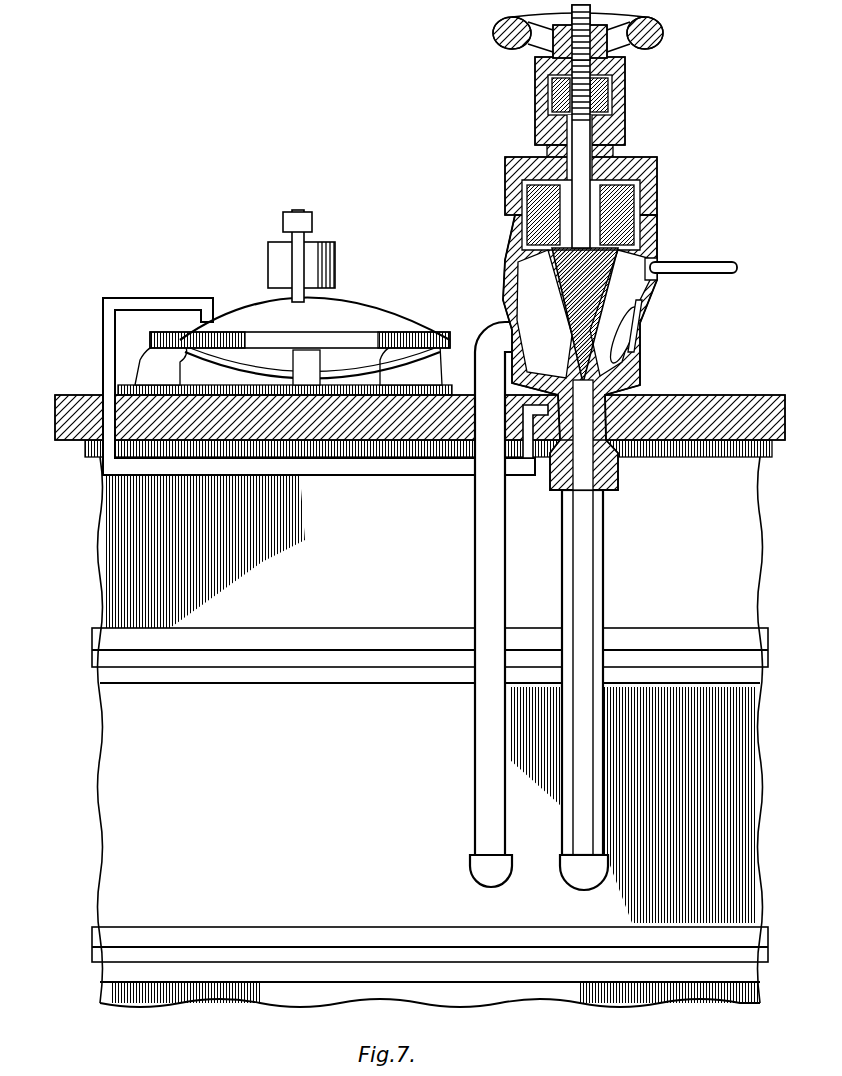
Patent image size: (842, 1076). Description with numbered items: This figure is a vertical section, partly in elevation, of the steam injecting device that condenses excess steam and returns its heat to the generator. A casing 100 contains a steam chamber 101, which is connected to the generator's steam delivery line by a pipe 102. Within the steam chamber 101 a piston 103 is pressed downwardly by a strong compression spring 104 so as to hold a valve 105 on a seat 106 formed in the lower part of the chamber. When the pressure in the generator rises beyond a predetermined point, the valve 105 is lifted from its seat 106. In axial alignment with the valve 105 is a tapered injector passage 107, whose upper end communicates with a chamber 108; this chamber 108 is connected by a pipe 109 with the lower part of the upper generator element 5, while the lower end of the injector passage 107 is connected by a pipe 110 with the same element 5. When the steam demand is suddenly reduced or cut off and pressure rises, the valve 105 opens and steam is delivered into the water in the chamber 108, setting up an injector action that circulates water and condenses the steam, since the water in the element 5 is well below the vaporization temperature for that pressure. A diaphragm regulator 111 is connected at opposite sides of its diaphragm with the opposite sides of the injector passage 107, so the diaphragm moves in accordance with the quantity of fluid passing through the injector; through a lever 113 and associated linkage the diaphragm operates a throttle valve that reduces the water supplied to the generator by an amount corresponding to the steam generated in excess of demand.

The upper generator element 5 is at (120, 745).
The casing 100 is at (655, 248).
The steam chamber 101 is at (660, 272).
The pipe 102 is at (700, 280).
The piston 103 is at (648, 222).
The compression spring 104 is at (630, 183).
The valve 105 is at (612, 296).
The seat 106 is at (625, 318).
The injector passage 107 is at (590, 378).
The chamber 108 is at (640, 343).
The pipe 109 is at (480, 604).
The pipe 110 is at (603, 540).
The diaphragm regulator 111 is at (380, 305).
The lever 113 is at (316, 215).